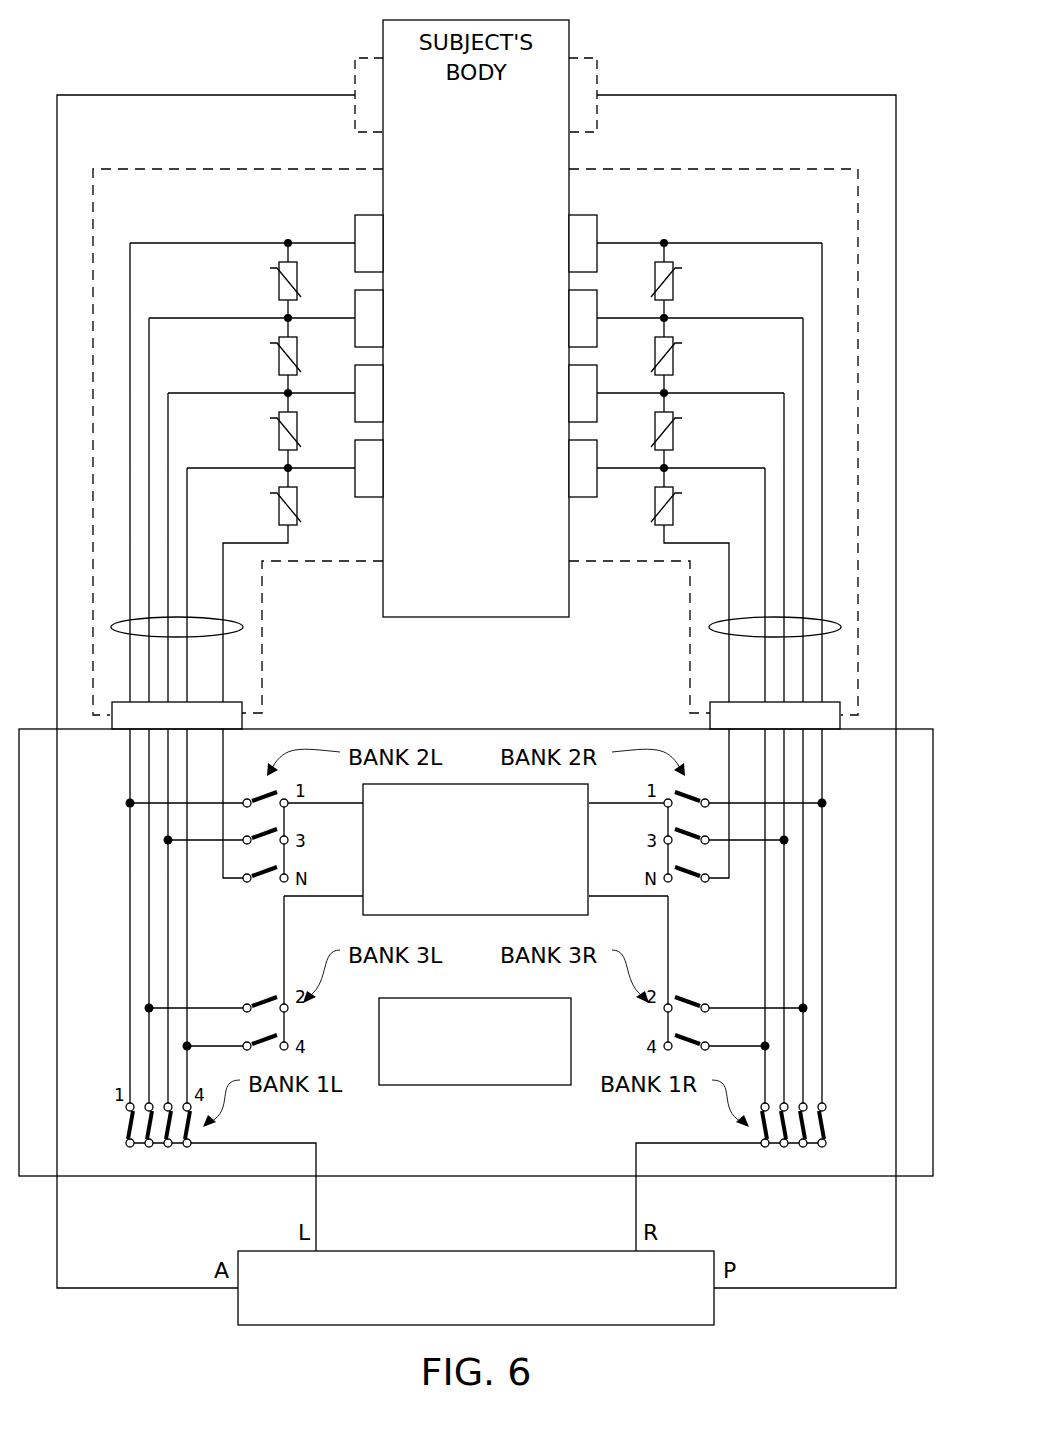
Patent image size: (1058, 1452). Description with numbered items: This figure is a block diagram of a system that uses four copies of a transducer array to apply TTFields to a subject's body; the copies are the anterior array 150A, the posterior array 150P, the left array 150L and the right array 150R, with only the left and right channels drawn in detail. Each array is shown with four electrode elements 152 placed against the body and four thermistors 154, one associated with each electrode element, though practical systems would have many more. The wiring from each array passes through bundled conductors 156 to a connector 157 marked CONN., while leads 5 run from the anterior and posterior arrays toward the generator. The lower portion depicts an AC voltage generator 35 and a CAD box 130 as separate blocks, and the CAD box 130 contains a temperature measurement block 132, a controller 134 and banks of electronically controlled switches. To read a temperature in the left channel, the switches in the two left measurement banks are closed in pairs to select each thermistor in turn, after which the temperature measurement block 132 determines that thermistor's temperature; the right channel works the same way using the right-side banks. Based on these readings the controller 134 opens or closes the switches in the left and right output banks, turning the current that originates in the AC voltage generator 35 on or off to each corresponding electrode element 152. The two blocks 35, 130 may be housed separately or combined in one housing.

The cable 5 is at (643, 87).
The AC voltage generator 35 is at (475, 1250).
The CAD box 130 is at (485, 728).
The temperature measurement block 132 is at (475, 849).
The controller 134 is at (475, 1041).
The anterior transducer array 150A is at (366, 58).
The posterior transducer array 150P is at (586, 58).
The left transducer array 150L is at (226, 168).
The right transducer array 150R is at (726, 168).
The electrode elements 152 is at (597, 197).
The thermistors 154 is at (678, 228).
The cable bundle 156 is at (709, 627).
The connector 157 is at (709, 702).